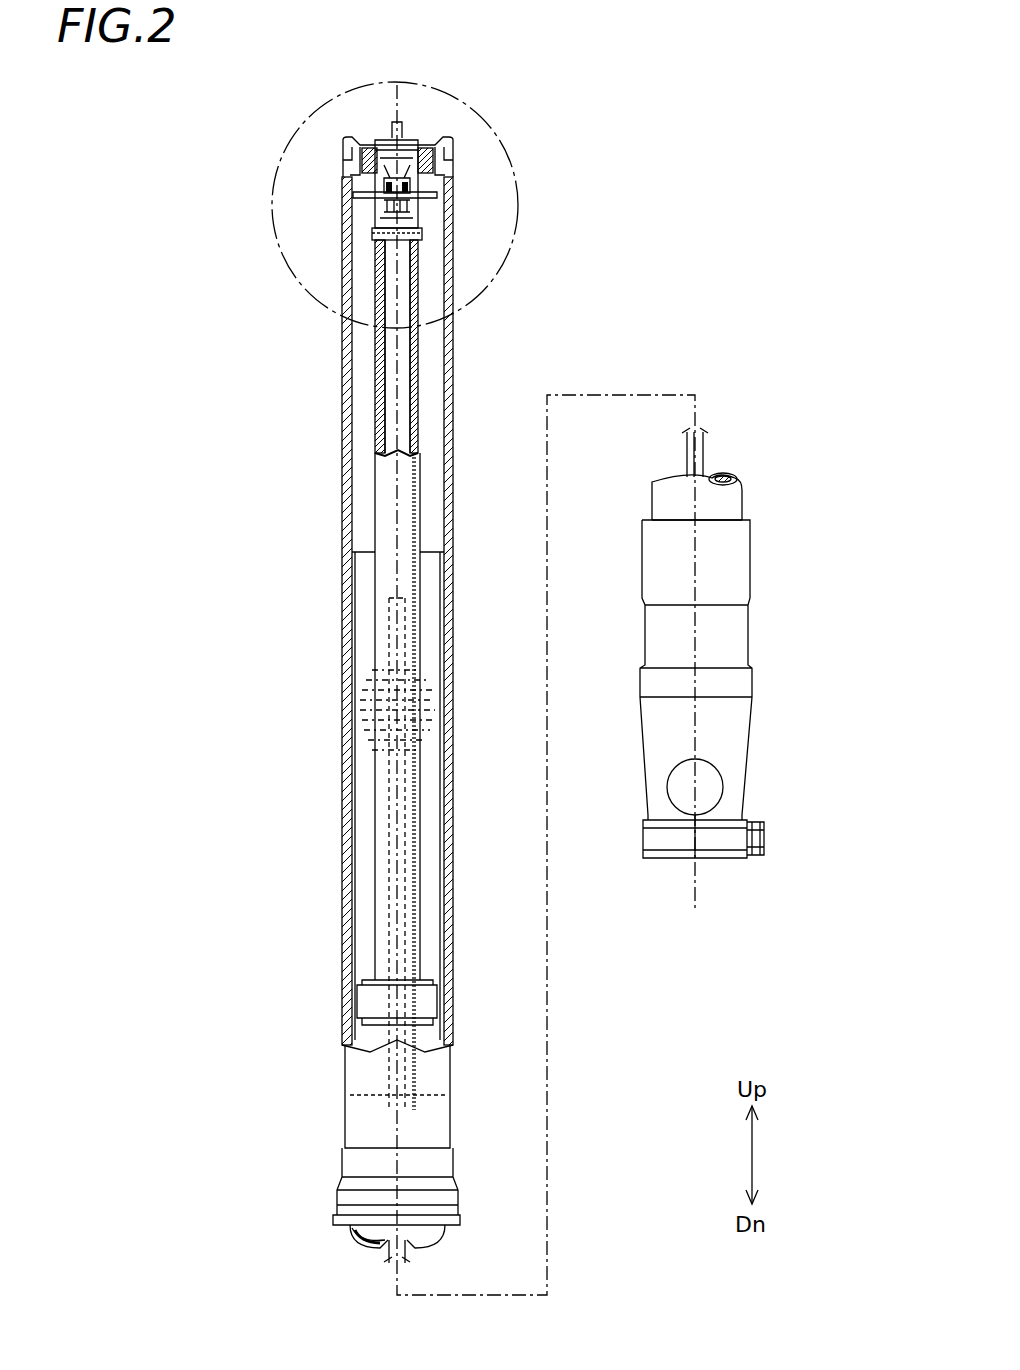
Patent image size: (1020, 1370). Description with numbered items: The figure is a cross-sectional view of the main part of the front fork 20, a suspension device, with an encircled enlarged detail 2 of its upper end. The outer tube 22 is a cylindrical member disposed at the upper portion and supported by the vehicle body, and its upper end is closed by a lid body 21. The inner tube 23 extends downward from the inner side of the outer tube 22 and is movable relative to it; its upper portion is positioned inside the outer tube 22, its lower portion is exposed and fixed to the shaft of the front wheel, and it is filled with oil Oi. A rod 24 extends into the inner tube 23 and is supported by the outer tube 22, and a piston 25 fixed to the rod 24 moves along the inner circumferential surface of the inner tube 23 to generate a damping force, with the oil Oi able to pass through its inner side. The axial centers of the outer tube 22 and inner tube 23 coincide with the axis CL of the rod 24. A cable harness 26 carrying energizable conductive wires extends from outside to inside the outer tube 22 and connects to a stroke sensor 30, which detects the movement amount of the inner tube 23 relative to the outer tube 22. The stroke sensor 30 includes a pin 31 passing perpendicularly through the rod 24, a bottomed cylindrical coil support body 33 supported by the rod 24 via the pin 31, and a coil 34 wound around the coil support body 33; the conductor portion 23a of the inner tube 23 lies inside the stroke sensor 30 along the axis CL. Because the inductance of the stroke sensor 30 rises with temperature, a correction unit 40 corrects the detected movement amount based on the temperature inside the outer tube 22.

The cross-sectional view (enlarged detail) 2 is at (510, 158).
The front fork 20 is at (218, 132).
The lid body 21 is at (360, 148).
The outer tube 22 is at (343, 398).
The inner tube 23 is at (745, 498).
The conductor portion 23a is at (415, 600).
The rod 24 is at (386, 492).
The piston 25 is at (372, 1003).
The cable harness 26 is at (405, 128).
The stroke sensor 30 is at (430, 213).
The pin 31 is at (372, 234).
The coil support body 33 is at (402, 360).
The coil 34 is at (418, 258).
The correction unit 40 is at (365, 200).
The oil Oi is at (388, 700).
The axis CL is at (392, 1272).